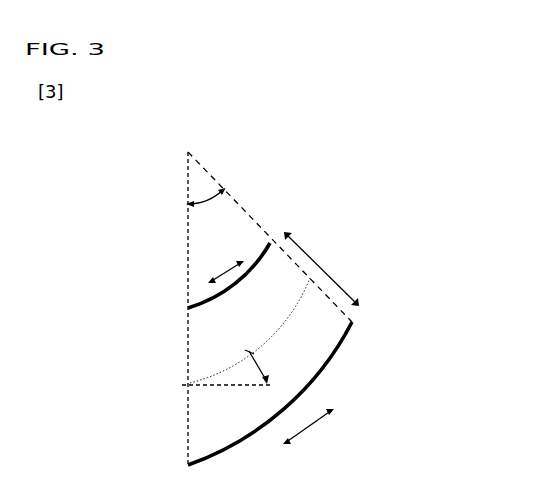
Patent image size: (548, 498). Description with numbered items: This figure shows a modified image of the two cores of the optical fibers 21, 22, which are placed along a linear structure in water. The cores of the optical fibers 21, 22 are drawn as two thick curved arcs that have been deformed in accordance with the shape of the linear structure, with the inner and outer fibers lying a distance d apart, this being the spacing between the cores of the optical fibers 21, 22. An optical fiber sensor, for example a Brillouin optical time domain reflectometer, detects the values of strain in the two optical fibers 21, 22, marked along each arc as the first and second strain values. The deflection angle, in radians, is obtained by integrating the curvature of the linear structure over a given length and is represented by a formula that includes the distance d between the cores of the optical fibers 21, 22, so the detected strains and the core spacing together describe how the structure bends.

The optical fiber 21 is at (238, 286).
The optical fiber 22 is at (340, 350).
The distance between the cores d is at (321, 269).